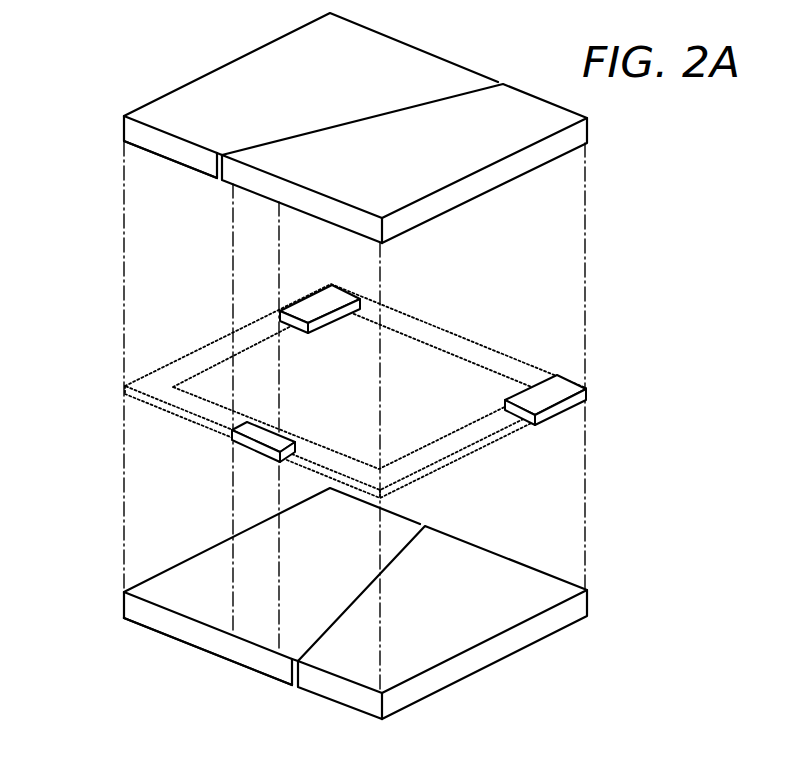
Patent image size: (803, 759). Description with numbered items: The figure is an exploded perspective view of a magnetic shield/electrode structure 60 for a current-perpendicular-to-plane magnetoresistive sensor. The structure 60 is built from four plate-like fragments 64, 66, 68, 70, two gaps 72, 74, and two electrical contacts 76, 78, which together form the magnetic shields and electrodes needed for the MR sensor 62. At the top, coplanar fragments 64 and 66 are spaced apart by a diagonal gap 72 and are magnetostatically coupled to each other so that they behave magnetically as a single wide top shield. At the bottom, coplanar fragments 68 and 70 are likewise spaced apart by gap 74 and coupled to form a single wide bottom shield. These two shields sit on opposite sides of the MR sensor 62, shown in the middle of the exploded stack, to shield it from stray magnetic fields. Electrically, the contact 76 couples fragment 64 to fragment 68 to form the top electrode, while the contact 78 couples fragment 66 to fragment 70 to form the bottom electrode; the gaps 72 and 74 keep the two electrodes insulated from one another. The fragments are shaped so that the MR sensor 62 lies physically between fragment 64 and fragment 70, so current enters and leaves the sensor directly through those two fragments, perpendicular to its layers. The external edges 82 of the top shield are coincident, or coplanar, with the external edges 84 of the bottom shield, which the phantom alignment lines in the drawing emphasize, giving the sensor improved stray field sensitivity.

The magnetic shield/electrode structure 60 is at (111, 67).
The MR sensor 62 is at (262, 432).
The fragment 64 is at (564, 116).
The fragment 66 is at (418, 63).
The fragment 68 is at (488, 575).
The fragment 70 is at (203, 582).
The gap 72 is at (208, 186).
The gap 74 is at (295, 698).
The electrical contact 76 is at (543, 393).
The electrical contact 78 is at (318, 302).
The external edges 82 is at (152, 137).
The external edges 84 is at (163, 620).